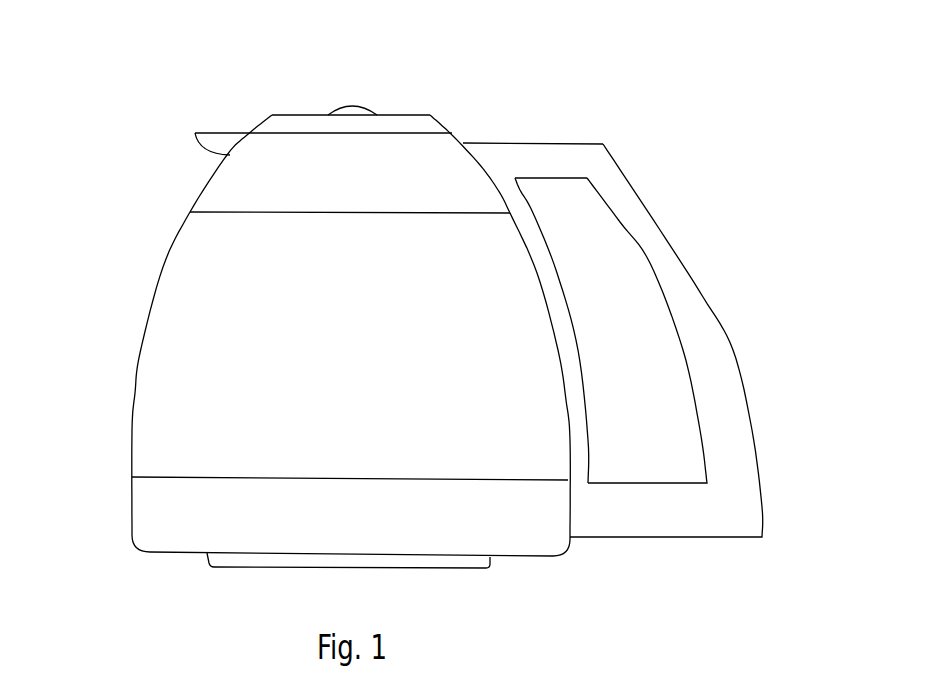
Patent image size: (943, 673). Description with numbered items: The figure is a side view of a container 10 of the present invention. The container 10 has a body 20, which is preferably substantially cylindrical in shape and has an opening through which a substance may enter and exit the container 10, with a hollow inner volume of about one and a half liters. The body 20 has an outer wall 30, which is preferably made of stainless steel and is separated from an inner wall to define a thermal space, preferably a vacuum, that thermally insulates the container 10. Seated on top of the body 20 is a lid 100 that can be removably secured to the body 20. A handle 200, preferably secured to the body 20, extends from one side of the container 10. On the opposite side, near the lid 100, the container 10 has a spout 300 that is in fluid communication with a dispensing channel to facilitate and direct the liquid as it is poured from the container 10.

The container 10 is at (158, 89).
The body 20 is at (126, 297).
The outer wall 30 is at (135, 393).
The lid 100 is at (296, 88).
The handle 200 is at (726, 255).
The spout 300 is at (233, 133).